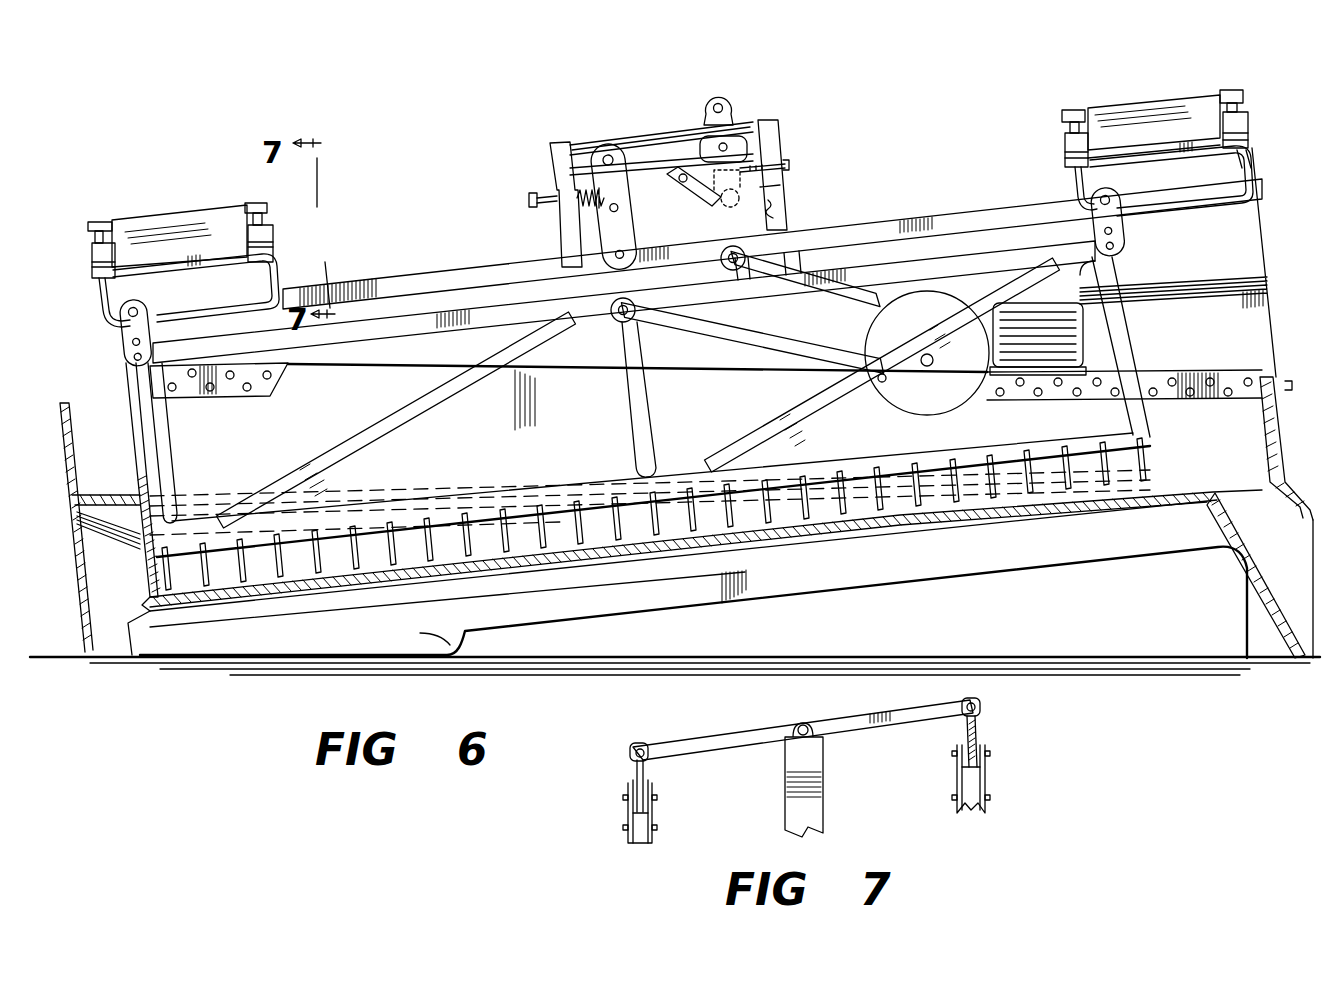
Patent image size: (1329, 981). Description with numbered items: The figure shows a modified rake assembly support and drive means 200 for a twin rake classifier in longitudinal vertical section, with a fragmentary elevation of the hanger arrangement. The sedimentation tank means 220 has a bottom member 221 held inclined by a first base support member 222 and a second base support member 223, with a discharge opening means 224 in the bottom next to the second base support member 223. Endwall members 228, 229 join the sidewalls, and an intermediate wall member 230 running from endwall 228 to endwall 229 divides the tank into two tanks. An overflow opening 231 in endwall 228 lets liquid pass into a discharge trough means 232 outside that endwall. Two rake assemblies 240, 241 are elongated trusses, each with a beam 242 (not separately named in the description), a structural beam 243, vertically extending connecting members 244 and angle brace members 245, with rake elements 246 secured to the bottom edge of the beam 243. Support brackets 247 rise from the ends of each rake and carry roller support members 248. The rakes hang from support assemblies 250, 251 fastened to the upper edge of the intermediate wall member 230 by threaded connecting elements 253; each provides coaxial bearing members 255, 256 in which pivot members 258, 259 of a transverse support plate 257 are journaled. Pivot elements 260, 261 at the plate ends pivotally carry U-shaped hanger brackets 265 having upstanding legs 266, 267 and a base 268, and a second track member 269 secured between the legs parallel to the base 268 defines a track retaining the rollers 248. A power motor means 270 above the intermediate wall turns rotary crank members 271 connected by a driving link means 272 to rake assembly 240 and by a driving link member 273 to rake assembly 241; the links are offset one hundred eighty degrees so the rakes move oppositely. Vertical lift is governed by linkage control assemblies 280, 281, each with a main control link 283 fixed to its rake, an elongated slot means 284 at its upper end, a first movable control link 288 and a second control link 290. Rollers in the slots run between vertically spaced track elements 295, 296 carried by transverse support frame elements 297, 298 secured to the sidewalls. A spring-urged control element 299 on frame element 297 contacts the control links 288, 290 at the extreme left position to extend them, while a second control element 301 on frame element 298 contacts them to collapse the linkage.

In FIG. 6, the rake assembly support and drive means 200 is at (484, 182).
In FIG. 6, the sedimentation tank means 220 is at (1068, 554).
In FIG. 6, the bottom member 221 is at (905, 510).
In FIG. 6, the first base support member 222 is at (450, 645).
In FIG. 6, the second base support member 223 is at (1247, 612).
In FIG. 6, the discharge opening means 224 is at (1264, 491).
In FIG. 6, the endwall member 228 is at (143, 565).
In FIG. 6, the endwall member 229 is at (1272, 440).
In FIG. 6, the intermediate wall member 230 is at (450, 469).
In FIG. 6, the overflow opening 231 is at (140, 483).
In FIG. 6, the discharge trough means 232 is at (82, 495).
In FIG. 7, the rake assembly 240 is at (623, 850).
In FIG. 6, the rake assembly 241 is at (930, 224).
In FIG. 7, the rake assembly 241 is at (990, 808).
In FIG. 6, the top chord 242 is at (624, 302).
In FIG. 6, the support beam 243 is at (923, 451).
In FIG. 6, the vertical extending connecting members 244 is at (160, 452).
In FIG. 6, the angle brace members 245 is at (430, 402).
In FIG. 6, the rake elements 246 is at (455, 522).
In FIG. 6, the support bracket 247 is at (133, 348).
In FIG. 7, the support bracket 247 is at (626, 815).
In FIG. 6, the roller support members 248 is at (125, 322).
In FIG. 7, the roller support members 248 is at (628, 778).
In FIG. 6, the support assembly 250 is at (94, 301).
In FIG. 6, the support assembly 251 is at (1262, 225).
In FIG. 6, the threaded connecting elements 253 is at (249, 390).
In FIG. 6, the bearing member 255 is at (95, 258).
In FIG. 6, the bearing member 256 is at (265, 230).
In FIG. 7, the bearing member 256 is at (800, 730).
In FIG. 6, the transverse support plates 257 is at (216, 199).
In FIG. 7, the transverse support plates 257 is at (803, 730).
In FIG. 6, the pivot member 258 is at (114, 272).
In FIG. 6, the pivot member 259 is at (250, 235).
In FIG. 7, the pivot member 259 is at (806, 726).
In FIG. 6, the pivot element 260 is at (107, 240).
In FIG. 6, the pivot element 261 is at (255, 207).
In FIG. 7, the pivot element 261 is at (636, 748).
In FIG. 6, the hanger brackets 265 is at (282, 270).
In FIG. 7, the hanger brackets 265 is at (627, 763).
In FIG. 6, the upstanding leg 266 is at (102, 315).
In FIG. 6, the upstanding leg 267 is at (279, 292).
In FIG. 7, the upstanding leg 267 is at (976, 740).
In FIG. 6, the base 268 is at (205, 318).
In FIG. 6, the second track member 269 is at (175, 297).
In FIG. 6, the power motor means 270 is at (1010, 338).
In FIG. 6, the rotary crank members 271 is at (950, 312).
In FIG. 6, the driving link means 272 is at (705, 337).
In FIG. 6, the driving link member 273 is at (845, 288).
In FIG. 6, the linkage control assembly 280 is at (632, 238).
In FIG. 6, the linkage control assembly 281 is at (745, 200).
In FIG. 6, the main control link 283 is at (590, 286).
In FIG. 6, the elongated slot means 284 is at (720, 98).
In FIG. 6, the first movable control link 288 is at (606, 142).
In FIG. 6, the second control link 290 is at (572, 228).
In FIG. 6, the track element 295 is at (668, 135).
In FIG. 6, the track element 296 is at (655, 168).
In FIG. 6, the transverse support frame element 297 is at (553, 158).
In FIG. 6, the transverse support frame element 298 is at (770, 125).
In FIG. 6, the control element 299 is at (545, 198).
In FIG. 6, the second control element 301 is at (762, 170).